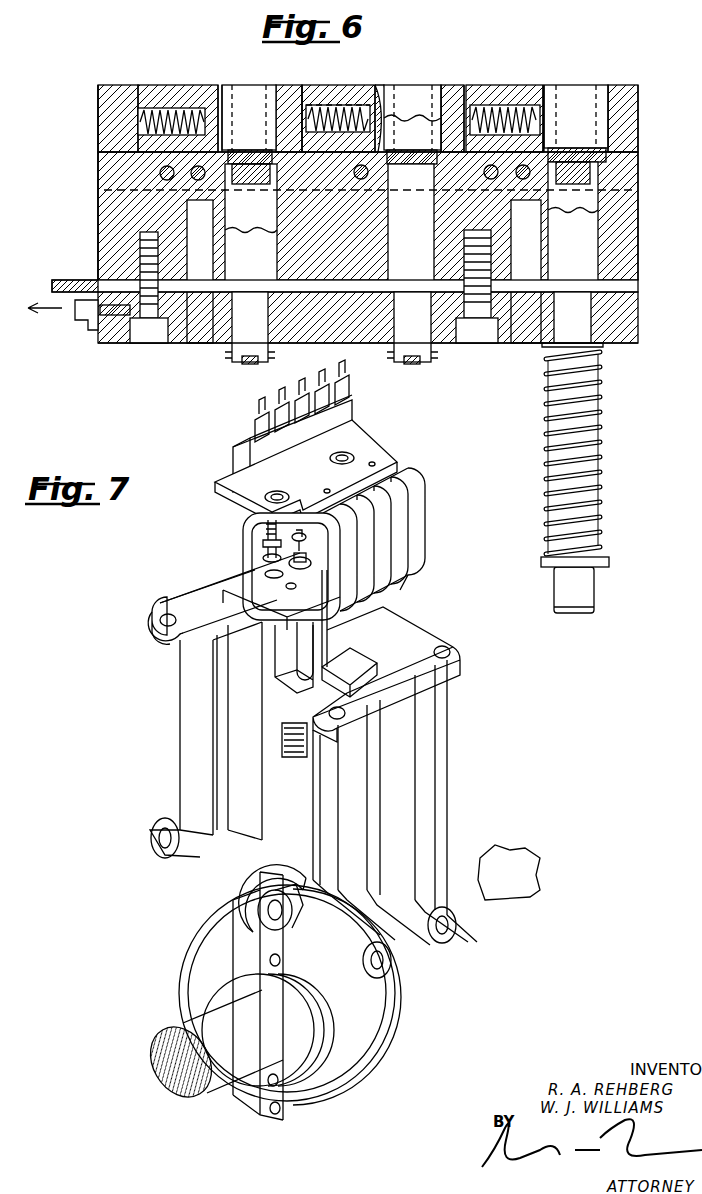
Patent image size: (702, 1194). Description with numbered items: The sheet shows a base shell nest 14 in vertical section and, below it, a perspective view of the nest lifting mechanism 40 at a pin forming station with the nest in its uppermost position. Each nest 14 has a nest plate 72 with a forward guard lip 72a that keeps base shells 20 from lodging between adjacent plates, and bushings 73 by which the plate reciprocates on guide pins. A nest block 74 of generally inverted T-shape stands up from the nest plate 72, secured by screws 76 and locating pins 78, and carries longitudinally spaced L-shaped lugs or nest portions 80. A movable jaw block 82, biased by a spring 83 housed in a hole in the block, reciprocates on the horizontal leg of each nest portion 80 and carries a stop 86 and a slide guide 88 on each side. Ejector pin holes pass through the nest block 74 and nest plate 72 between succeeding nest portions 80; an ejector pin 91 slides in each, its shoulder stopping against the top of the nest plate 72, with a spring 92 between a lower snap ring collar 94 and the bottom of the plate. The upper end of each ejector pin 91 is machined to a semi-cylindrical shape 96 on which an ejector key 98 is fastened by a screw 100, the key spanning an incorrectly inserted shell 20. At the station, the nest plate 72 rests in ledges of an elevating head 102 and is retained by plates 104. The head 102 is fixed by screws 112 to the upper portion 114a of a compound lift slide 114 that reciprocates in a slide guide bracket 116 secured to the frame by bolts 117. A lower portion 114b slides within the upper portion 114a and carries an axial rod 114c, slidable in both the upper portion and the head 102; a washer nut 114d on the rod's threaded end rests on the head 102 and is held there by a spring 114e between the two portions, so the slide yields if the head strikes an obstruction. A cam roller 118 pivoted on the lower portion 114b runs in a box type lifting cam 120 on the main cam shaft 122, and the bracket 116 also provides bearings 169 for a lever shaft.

In FIG. 6, the base shell nest 14 is at (114, 358).
In FIG. 7, the base shell nest 14 is at (366, 420).
In FIG. 6, the base shell 20 is at (240, 90).
In FIG. 7, the nest lifting mechanism 40 is at (459, 778).
In FIG. 6, the nest plate 72 is at (628, 343).
In FIG. 7, the nest plate 72 is at (360, 440).
In FIG. 6, the forward guard lip 72a is at (70, 300).
In FIG. 7, the forward guard lip 72a is at (212, 527).
In FIG. 7, the bushing 73 is at (288, 486).
In FIG. 6, the nest block 74 is at (100, 233).
In FIG. 7, the nest block 74 is at (233, 460).
In FIG. 6, the screw 76 is at (152, 338).
In FIG. 6, the locating pin 78 is at (200, 338).
In FIG. 6, the L-shaped lug or nest portion 80 is at (112, 85).
In FIG. 6, the movable jaw block 82 is at (166, 110).
In FIG. 7, the movable jaw block 82 is at (264, 440).
In FIG. 6, the spring 83 is at (192, 87).
In FIG. 6, the stop 86 is at (322, 105).
In FIG. 6, the slide guide 88 is at (382, 90).
In FIG. 6, the ejector pin 91 is at (250, 362).
In FIG. 6, the spring 92 is at (268, 358).
In FIG. 6, the snap ring collar 94 is at (609, 562).
In FIG. 6, the semi-cylindrical shape 96 is at (236, 150).
In FIG. 6, the ejector key 98 is at (420, 188).
In FIG. 6, the screw 100 is at (254, 215).
In FIG. 7, the elevating head 102 is at (412, 526).
In FIG. 7, the plate 104 is at (375, 462).
In FIG. 7, the screw 112 is at (255, 582).
In FIG. 7, the compound lift slide 114 is at (276, 702).
In FIG. 7, the upper portion 114a is at (332, 642).
In FIG. 7, the lower portion 114b is at (262, 850).
In FIG. 7, the axial rod 114c is at (298, 645).
In FIG. 7, the washer nut 114d is at (290, 563).
In FIG. 7, the spring 114e is at (290, 740).
In FIG. 7, the slide guide bracket 116 is at (440, 665).
In FIG. 7, the bolt 117 is at (160, 616).
In FIG. 7, the cam roller 118 is at (298, 890).
In FIG. 7, the box type lifting cam 120 is at (385, 1046).
In FIG. 7, the main cam shaft 122 is at (510, 868).
In FIG. 7, the bearing 169 is at (165, 860).